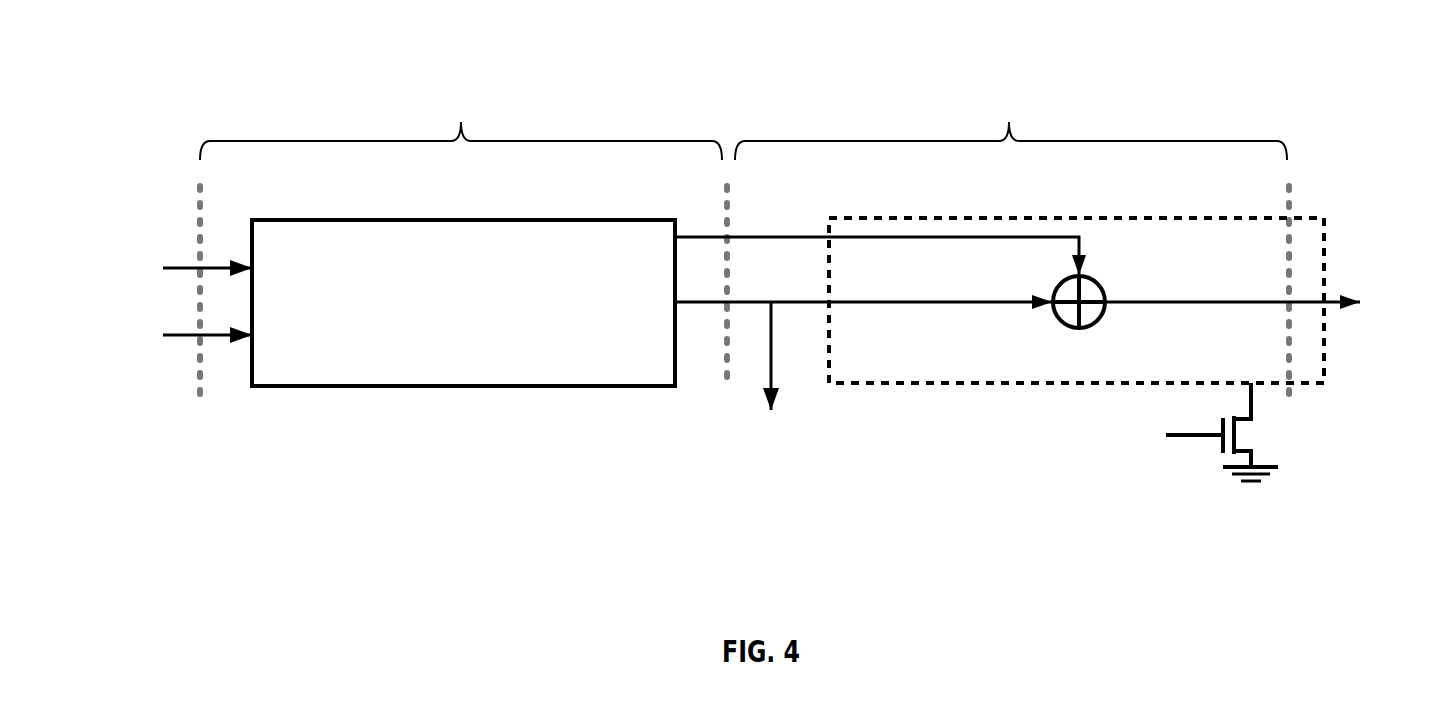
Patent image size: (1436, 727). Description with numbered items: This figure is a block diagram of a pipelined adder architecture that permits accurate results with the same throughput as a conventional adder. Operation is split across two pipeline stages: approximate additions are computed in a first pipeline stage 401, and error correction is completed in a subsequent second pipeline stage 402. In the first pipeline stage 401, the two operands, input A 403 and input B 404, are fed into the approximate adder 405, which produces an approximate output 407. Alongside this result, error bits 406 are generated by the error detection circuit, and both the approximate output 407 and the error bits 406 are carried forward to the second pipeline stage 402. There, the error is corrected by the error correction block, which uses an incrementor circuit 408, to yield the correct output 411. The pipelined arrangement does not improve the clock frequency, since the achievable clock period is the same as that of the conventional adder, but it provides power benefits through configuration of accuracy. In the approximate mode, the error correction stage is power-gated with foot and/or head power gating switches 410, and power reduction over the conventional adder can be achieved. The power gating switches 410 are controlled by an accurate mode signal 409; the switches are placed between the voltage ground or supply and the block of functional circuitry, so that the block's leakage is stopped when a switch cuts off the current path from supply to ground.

The first pipeline stage 401 is at (461, 114).
The second pipeline stage 402 is at (1029, 225).
The input A 403 is at (177, 253).
The input B 404 is at (181, 320).
The approximate adder 405 is at (463, 303).
The error bits 406 is at (766, 226).
The approximate output 407 is at (863, 385).
The error correction with incrementor circuit 408 is at (1100, 277).
The accurate mode signal 409 is at (1153, 440).
The power gating switches 410 is at (1256, 436).
The correct output 411 is at (1264, 300).